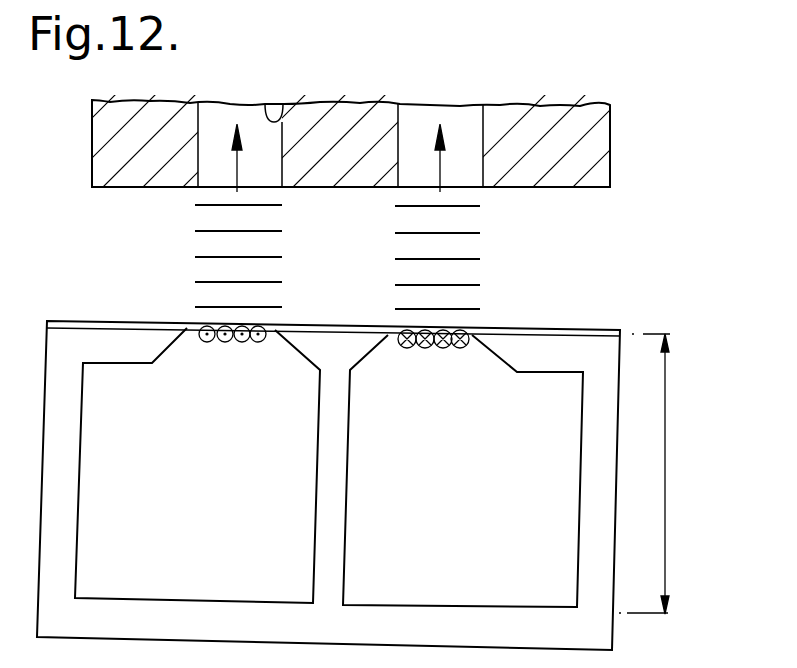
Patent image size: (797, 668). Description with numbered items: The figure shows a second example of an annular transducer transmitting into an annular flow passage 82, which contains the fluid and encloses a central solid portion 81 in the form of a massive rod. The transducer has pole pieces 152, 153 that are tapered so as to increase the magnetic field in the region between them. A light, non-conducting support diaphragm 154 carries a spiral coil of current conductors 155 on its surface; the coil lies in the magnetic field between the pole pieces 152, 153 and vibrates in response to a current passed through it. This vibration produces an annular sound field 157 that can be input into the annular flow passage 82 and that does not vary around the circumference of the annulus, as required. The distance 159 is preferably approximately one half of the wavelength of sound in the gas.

The central solid portion 81 is at (337, 188).
The annular flow passage 82 is at (268, 102).
The pole piece 152 is at (170, 348).
The pole piece 153 is at (378, 349).
The support diaphragm 154 is at (115, 320).
The spiral coil of current conductors 155 is at (242, 342).
The annular sound field 157 is at (463, 258).
The distance 159 is at (665, 466).